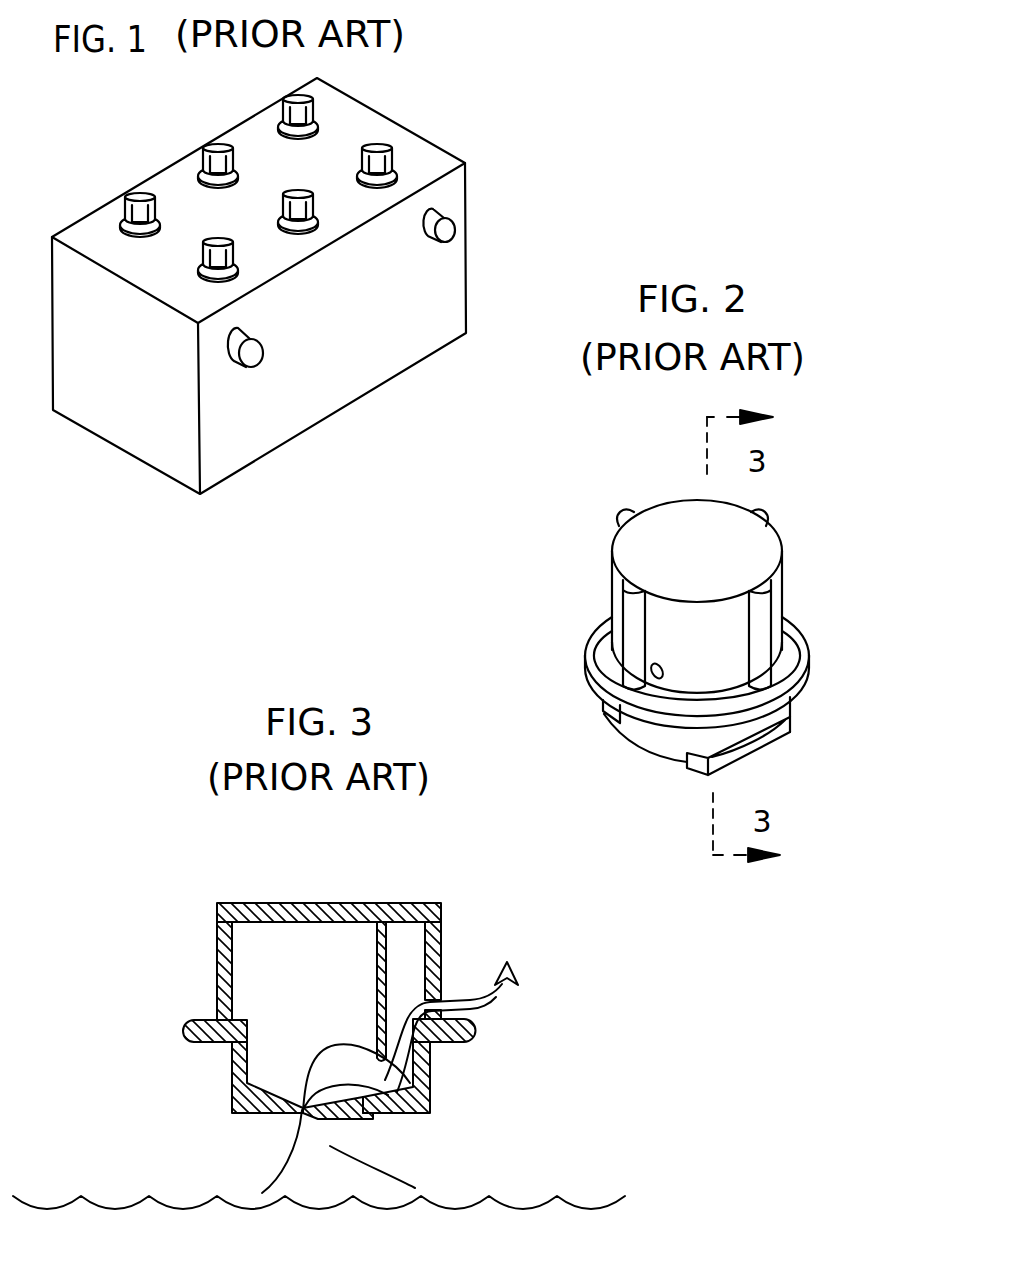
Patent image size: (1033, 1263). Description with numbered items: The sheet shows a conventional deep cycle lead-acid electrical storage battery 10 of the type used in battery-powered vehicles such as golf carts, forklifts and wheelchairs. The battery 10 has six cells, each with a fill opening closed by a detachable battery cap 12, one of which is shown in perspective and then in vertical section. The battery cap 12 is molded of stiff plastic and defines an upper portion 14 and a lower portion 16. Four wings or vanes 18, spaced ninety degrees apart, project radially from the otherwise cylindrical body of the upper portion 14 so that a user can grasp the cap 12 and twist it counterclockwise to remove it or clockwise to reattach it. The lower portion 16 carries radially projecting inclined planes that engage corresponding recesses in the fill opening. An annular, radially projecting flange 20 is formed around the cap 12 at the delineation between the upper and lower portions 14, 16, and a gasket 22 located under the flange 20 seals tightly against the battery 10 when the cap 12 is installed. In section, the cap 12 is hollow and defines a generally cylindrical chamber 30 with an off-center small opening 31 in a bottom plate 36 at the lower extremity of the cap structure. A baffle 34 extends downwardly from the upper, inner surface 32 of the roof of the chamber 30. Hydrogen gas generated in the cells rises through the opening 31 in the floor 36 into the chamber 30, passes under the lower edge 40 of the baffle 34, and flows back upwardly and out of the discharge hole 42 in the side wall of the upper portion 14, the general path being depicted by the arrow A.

In FIG. 1, the battery 10 is at (383, 123).
In FIG. 1, the battery cap 12 is at (283, 105).
In FIG. 2, the battery cap 12 is at (807, 596).
In FIG. 3, the battery cap 12 is at (604, 1131).
In FIG. 3, the upper portion 14 is at (222, 995).
In FIG. 2, the lower portion 16 is at (768, 752).
In FIG. 2, the wings or vanes 18 is at (625, 518).
In FIG. 3, the flange 20 is at (187, 1031).
In FIG. 3, the gasket 22 is at (203, 1043).
In FIG. 3, the chamber 30 is at (355, 937).
In FIG. 3, the opening 31 is at (310, 1118).
In FIG. 3, the upper inner surface 32 is at (267, 924).
In FIG. 3, the baffle 34 is at (375, 1018).
In FIG. 3, the bottom plate 36 is at (285, 1118).
In FIG. 3, the lower edge 40 is at (435, 1099).
In FIG. 2, the discharge hole 42 is at (655, 666).
In FIG. 3, the discharge hole 42 is at (443, 1013).
In FIG. 3, the arrow A is at (499, 1000).